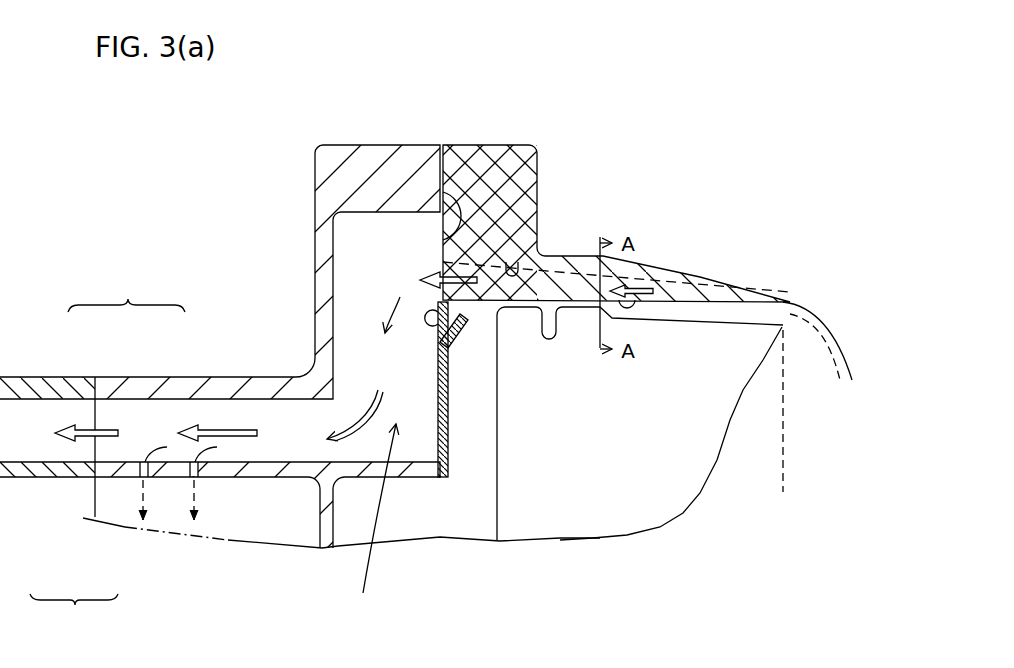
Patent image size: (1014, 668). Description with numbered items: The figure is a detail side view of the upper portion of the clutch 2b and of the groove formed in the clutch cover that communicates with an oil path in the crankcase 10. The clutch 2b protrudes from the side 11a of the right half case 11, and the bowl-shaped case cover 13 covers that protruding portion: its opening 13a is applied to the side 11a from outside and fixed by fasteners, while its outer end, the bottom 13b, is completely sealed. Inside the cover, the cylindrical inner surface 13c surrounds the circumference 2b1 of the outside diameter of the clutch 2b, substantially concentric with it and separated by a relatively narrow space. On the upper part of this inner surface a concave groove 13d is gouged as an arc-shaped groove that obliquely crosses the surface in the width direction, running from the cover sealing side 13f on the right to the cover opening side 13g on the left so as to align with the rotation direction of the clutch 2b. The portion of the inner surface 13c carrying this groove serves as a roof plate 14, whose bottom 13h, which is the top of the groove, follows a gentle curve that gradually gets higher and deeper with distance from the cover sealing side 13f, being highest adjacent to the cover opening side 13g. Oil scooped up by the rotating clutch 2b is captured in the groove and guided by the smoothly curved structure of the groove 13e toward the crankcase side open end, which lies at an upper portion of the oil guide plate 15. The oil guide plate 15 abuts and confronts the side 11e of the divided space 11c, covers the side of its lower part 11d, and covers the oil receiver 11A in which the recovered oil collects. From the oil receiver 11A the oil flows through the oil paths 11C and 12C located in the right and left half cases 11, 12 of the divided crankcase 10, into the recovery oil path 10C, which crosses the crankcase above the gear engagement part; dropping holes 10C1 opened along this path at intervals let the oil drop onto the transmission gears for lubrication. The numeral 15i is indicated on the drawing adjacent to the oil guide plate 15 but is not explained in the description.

The clutch 2b is at (665, 458).
The circumference of the outside diameter of the clutch 2b1 is at (690, 325).
The crankcase 10 is at (74, 618).
The recovery oil path 10C is at (156, 357).
The dropping holes 10C1 is at (222, 478).
The right half case 11 is at (123, 505).
The oil receiver 11A is at (364, 524).
The oil path 11C is at (160, 410).
The side of the right half case 11a is at (440, 197).
The divided space 11c is at (400, 282).
The lower part of the divided space 11d is at (430, 438).
The side of the divided space 11e is at (450, 433).
The left half case 12 is at (42, 502).
The oil path 12C is at (67, 405).
The case cover 13 is at (739, 160).
The opening of the case cover 13a is at (487, 245).
The bottom of the case cover 13b is at (822, 313).
The cylindrical inner surface 13c is at (652, 268).
The concave groove 13d is at (567, 254).
The groove 13e is at (627, 292).
The cover sealing side 13f is at (728, 302).
The cover opening side 13g is at (452, 238).
The bottom of the roof plate 13h is at (515, 290).
The roof plate 14 is at (689, 210).
The oil guide plate 15 is at (450, 400).
The plate projection 15i is at (464, 338).